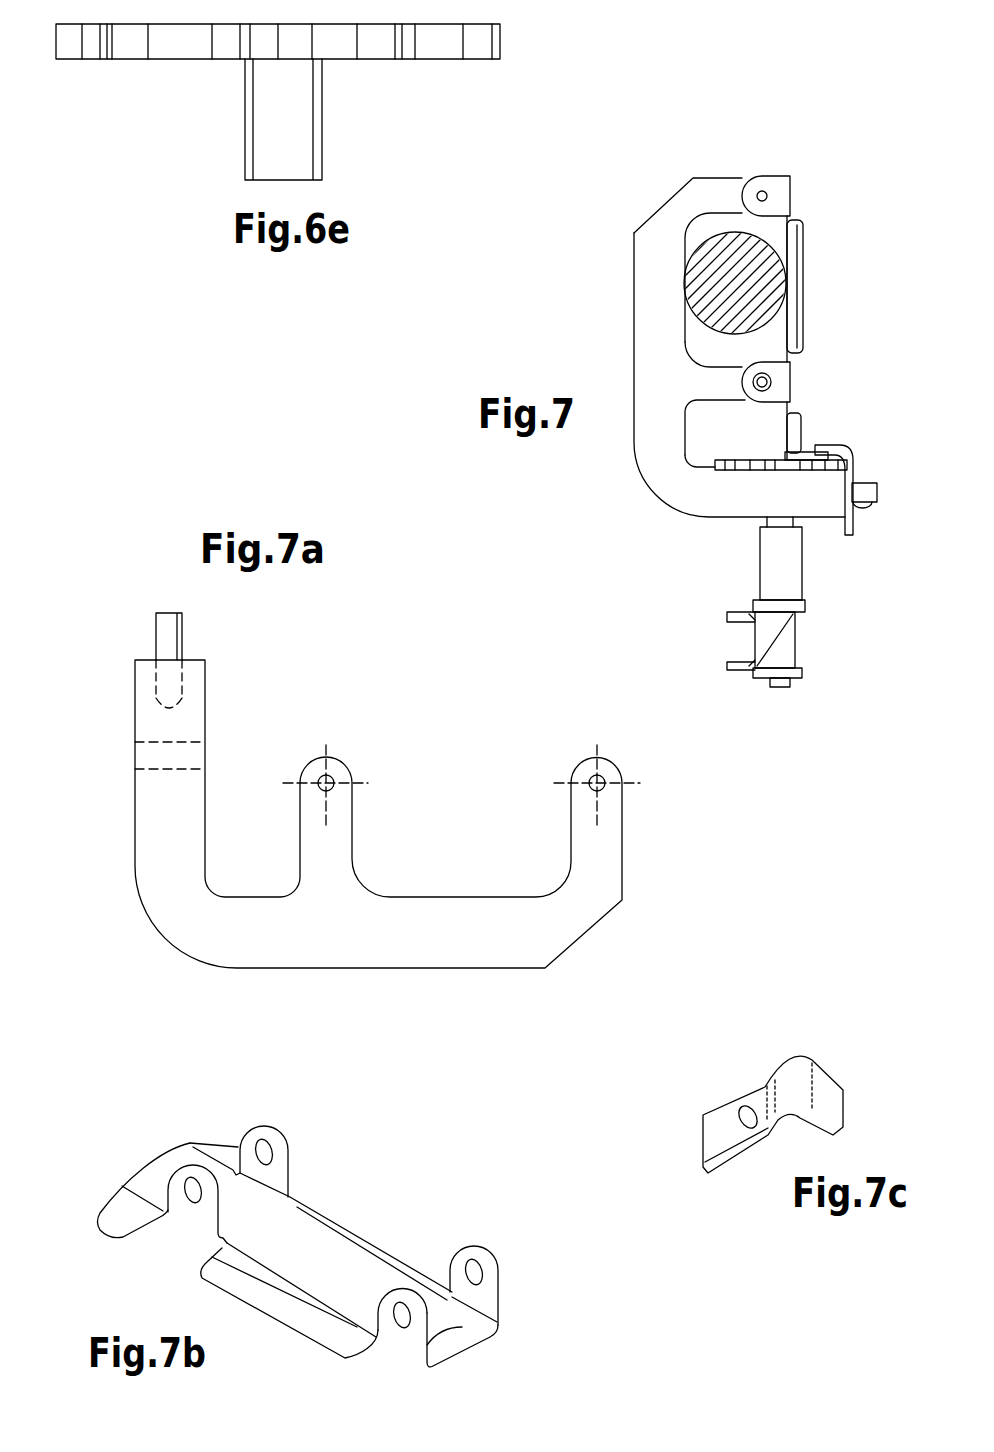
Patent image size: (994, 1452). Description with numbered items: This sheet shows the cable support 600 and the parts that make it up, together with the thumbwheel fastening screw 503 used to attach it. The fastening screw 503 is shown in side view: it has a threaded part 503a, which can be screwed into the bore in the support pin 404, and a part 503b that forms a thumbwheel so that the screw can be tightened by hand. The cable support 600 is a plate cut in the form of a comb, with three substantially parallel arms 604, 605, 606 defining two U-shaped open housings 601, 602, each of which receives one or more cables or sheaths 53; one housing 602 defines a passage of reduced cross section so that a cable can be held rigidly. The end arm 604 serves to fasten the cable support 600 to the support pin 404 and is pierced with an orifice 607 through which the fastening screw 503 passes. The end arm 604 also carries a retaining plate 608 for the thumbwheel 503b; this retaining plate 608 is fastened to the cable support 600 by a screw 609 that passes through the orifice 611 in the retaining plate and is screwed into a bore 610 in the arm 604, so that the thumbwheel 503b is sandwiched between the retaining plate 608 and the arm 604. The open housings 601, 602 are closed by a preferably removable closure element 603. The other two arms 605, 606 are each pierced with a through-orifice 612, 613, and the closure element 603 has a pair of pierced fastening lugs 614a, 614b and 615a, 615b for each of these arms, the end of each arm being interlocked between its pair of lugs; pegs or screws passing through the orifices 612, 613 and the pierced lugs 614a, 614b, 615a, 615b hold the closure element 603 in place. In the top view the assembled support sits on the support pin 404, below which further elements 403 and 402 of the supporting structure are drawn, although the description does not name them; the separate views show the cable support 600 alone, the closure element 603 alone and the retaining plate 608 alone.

In FIG. 6E, the fastening screw 503 is at (331, 98).
In FIG. 6E, the threaded part 503a is at (323, 105).
In FIG. 6E, the thumbwheel 503b is at (505, 42).
In FIG. 7, the thumbwheel 503b is at (737, 460).
In FIG. 7, the cable support 600 is at (701, 336).
In FIG. 7A, the cable support 600 is at (380, 787).
In FIG. 7, the arm 606 is at (715, 182).
In FIG. 7A, the arm 606 is at (638, 781).
In FIG. 7, the arm 605 is at (723, 382).
In FIG. 7A, the arm 605 is at (377, 776).
In FIG. 7, the end arm 604 is at (737, 500).
In FIG. 7A, the end arm 604 is at (143, 724).
In FIG. 7, the cable or sheath 53 is at (710, 263).
In FIG. 7, the closure element 603 is at (820, 279).
In FIG. 7B, the closure element 603 is at (351, 1217).
In FIG. 7, the fastening lug 614a is at (765, 182).
In FIG. 7B, the fastening lug 614a is at (275, 1127).
In FIG. 7B, the fastening lug 614b is at (190, 1170).
In FIG. 7, the fastening lug 615a is at (773, 372).
In FIG. 7B, the fastening lug 615a is at (505, 1287).
In FIG. 7B, the fastening lug 615b is at (433, 1330).
In FIG. 7, the retaining plate 608 is at (850, 472).
In FIG. 7C, the retaining plate 608 is at (776, 1067).
In FIG. 7, the screw 609 is at (877, 490).
In FIG. 7A, the screw 609 is at (167, 628).
In FIG. 7A, the bore 610 is at (172, 643).
In FIG. 7A, the orifice 607 is at (163, 745).
In FIG. 7A, the open housing 602 is at (250, 805).
In FIG. 7A, the open housing 601 is at (490, 770).
In FIG. 7A, the through-orifice 612 is at (332, 777).
In FIG. 7A, the through-orifice 613 is at (598, 777).
In FIG. 7C, the orifice 611 is at (745, 1120).
In FIG. 7, the support pin 404 is at (803, 573).
In FIG. 7, the connector 403 is at (777, 633).
In FIG. 7, the end cap 402 is at (804, 673).